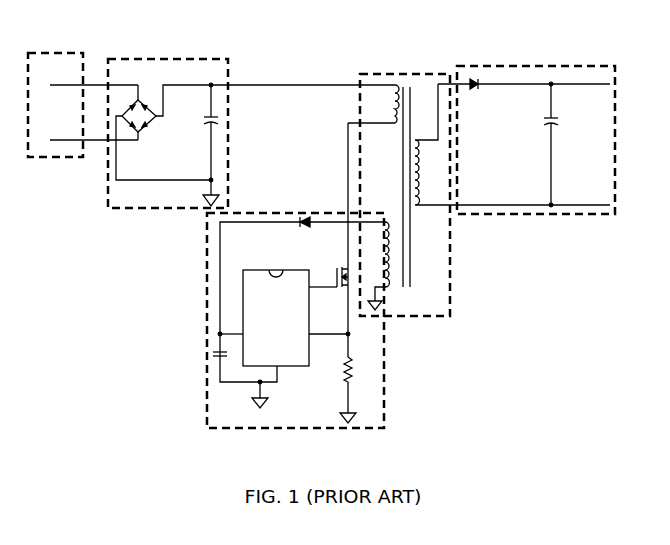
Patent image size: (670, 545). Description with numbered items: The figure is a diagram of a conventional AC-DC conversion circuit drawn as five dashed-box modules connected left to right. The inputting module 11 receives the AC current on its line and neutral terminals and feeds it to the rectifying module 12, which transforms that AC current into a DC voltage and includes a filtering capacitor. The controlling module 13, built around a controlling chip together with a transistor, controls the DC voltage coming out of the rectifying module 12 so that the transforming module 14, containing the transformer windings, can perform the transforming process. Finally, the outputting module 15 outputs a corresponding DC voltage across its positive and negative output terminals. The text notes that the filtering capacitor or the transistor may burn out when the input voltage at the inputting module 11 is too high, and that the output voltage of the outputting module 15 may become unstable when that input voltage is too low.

The inputting module 11 is at (52, 148).
The rectifying module 12 is at (138, 195).
The controlling module 13 is at (268, 235).
The transforming module 14 is at (435, 300).
The outputting module 15 is at (527, 200).